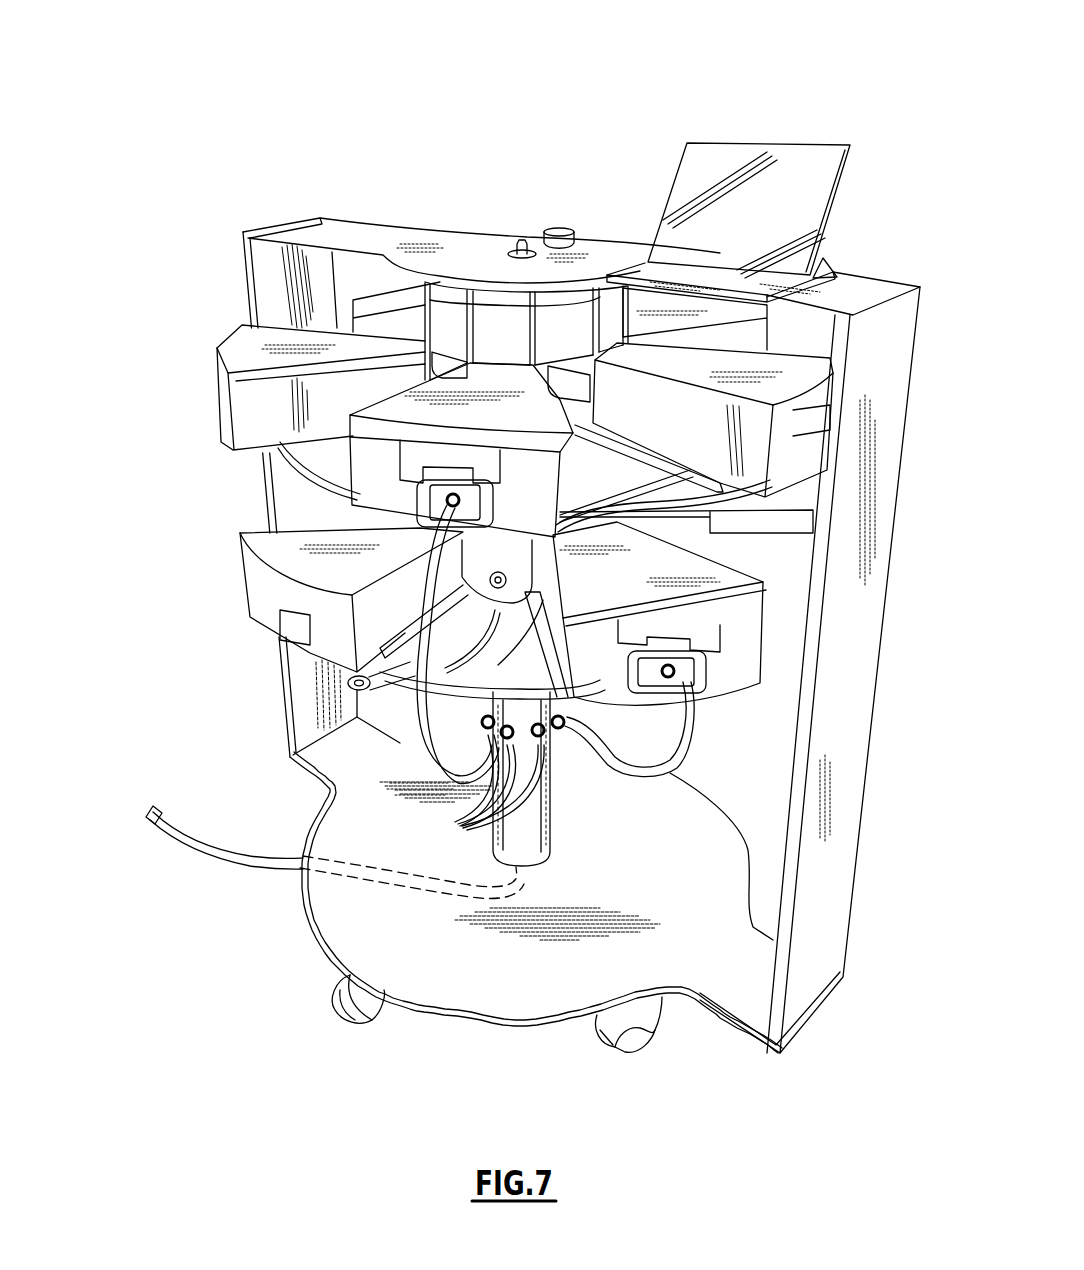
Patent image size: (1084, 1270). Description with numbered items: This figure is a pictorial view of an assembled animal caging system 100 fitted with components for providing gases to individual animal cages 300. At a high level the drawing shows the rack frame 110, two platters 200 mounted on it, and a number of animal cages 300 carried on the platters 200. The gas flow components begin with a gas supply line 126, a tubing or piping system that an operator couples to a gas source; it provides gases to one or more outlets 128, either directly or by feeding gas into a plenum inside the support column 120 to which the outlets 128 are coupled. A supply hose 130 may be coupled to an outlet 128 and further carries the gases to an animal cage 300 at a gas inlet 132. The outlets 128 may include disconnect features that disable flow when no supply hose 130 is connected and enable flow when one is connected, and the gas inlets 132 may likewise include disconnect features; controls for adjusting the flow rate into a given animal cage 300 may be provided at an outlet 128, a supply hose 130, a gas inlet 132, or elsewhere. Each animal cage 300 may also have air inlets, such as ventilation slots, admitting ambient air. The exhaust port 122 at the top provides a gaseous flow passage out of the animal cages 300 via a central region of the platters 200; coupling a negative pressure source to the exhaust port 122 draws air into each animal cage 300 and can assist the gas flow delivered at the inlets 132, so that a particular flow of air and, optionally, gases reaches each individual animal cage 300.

The animal caging system 100 is at (768, 36).
The rack frame 110 is at (717, 950).
The support column 120 is at (567, 833).
The exhaust port 122 is at (562, 230).
The gas supply line 126 is at (148, 810).
The outlets 128 is at (480, 808).
The supply hose 130 is at (420, 747).
The gas inlet 132 is at (420, 498).
The platters 200 is at (646, 518).
The animal cages 300 is at (527, 420).